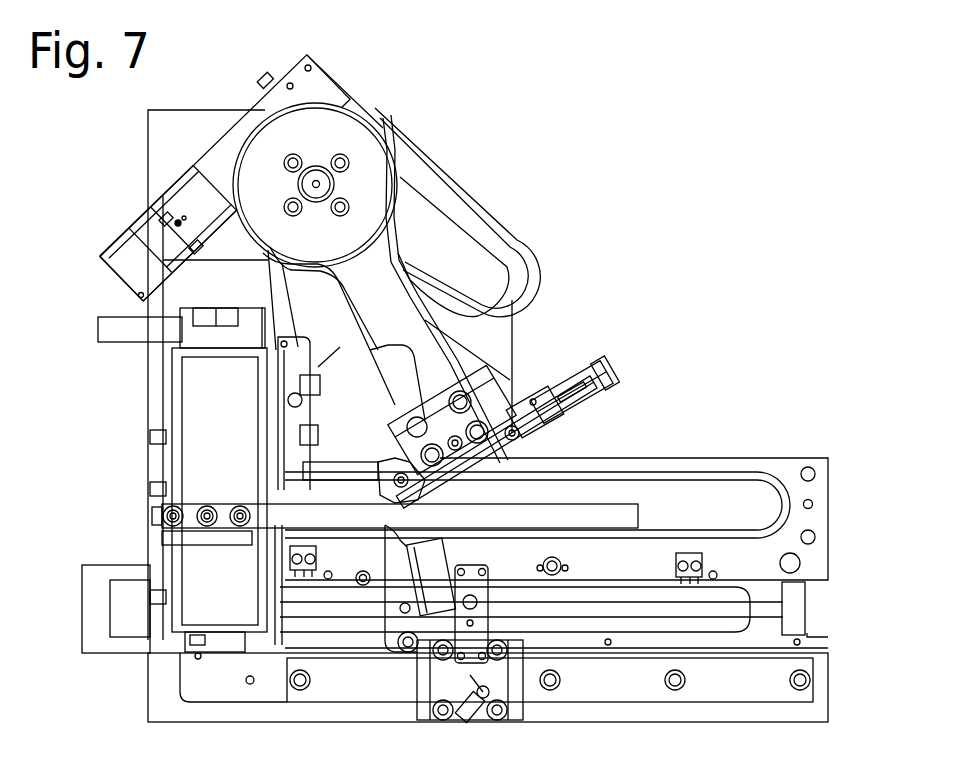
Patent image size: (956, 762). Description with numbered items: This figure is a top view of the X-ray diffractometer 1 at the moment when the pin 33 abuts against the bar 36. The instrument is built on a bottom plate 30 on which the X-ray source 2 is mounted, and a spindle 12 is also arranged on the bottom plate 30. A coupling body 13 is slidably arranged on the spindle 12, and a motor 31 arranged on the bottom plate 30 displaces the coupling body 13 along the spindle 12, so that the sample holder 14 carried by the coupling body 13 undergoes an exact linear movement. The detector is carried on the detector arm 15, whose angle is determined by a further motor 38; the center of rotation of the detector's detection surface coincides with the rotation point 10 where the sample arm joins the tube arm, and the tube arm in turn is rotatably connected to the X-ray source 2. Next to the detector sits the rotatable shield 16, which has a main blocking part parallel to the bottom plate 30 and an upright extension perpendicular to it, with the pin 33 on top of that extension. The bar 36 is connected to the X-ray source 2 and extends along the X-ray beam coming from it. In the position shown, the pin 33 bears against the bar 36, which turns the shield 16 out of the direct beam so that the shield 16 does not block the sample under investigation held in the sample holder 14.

The X-ray diffractometer 1 is at (502, 160).
The X-ray source 2 is at (202, 402).
The rotation point 10 is at (322, 183).
The spindle 12 is at (765, 610).
The coupling body 13 is at (480, 700).
The sample holder 14 is at (430, 590).
The detector arm 15 is at (380, 307).
The shield 16 is at (470, 458).
The bottom plate 30 is at (748, 468).
The motor 31 is at (108, 602).
The pin 33 is at (388, 490).
The bar 36 is at (640, 513).
The motor 38 is at (140, 250).